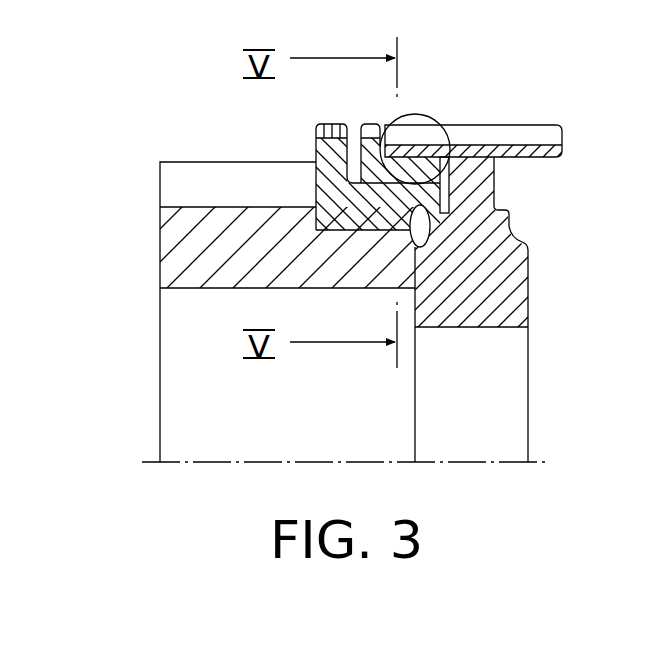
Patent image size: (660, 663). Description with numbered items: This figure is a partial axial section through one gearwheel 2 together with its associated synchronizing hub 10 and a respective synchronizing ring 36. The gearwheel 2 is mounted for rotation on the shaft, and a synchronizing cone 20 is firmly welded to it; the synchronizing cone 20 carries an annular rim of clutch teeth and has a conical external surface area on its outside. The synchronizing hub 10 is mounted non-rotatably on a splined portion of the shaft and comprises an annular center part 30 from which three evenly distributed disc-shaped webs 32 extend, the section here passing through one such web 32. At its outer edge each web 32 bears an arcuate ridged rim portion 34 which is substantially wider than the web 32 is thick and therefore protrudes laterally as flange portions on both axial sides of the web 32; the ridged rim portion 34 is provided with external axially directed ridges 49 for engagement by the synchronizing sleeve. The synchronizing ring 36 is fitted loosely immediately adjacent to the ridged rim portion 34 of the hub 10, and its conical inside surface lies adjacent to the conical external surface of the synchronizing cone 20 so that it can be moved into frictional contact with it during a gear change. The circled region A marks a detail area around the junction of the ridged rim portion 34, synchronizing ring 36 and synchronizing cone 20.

The gearwheel 2 is at (178, 256).
The synchronizing hub 10 is at (532, 372).
The synchronizing cone 20 is at (316, 130).
The annular center part 30 is at (495, 285).
The disc-shaped web 32 is at (478, 192).
The ridged rim portion 34 is at (505, 120).
The synchronizing ring 36 is at (478, 176).
The external axially directed ridges 49 is at (518, 138).
The detail region A is at (443, 112).